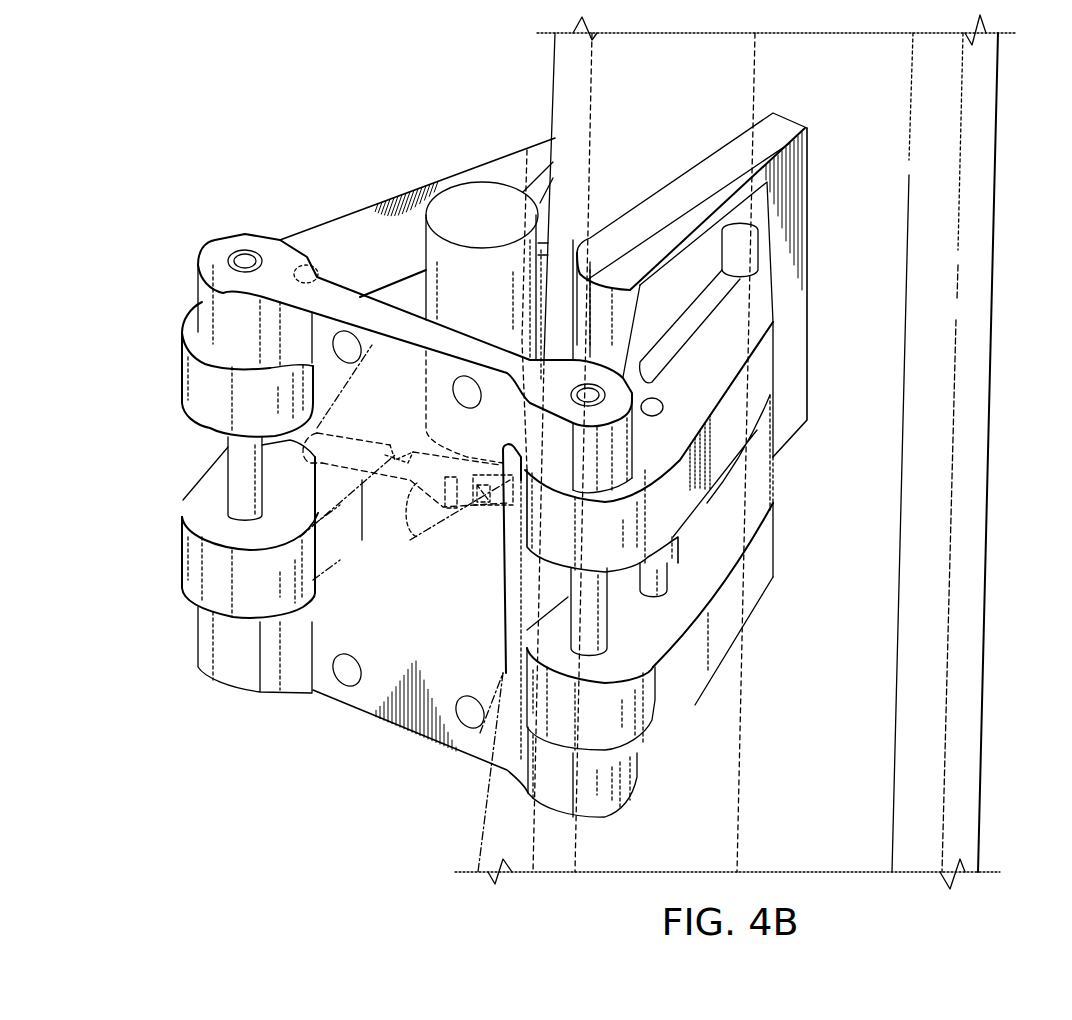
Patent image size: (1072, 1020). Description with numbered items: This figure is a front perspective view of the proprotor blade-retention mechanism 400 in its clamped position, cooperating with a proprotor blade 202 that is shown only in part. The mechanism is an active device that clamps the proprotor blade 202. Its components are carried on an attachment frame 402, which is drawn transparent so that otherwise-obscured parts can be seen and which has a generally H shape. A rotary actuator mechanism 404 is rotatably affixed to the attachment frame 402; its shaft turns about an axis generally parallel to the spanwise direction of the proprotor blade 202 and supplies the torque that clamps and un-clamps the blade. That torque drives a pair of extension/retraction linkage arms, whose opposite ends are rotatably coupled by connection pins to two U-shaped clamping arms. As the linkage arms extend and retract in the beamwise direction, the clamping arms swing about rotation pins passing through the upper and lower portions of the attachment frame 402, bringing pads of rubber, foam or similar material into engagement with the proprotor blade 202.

The proprotor blade-retention mechanism 400 is at (268, 80).
The proprotor blade 202 is at (990, 333).
The attachment frame 402 is at (355, 700).
The rotary actuator mechanism 404 is at (483, 195).